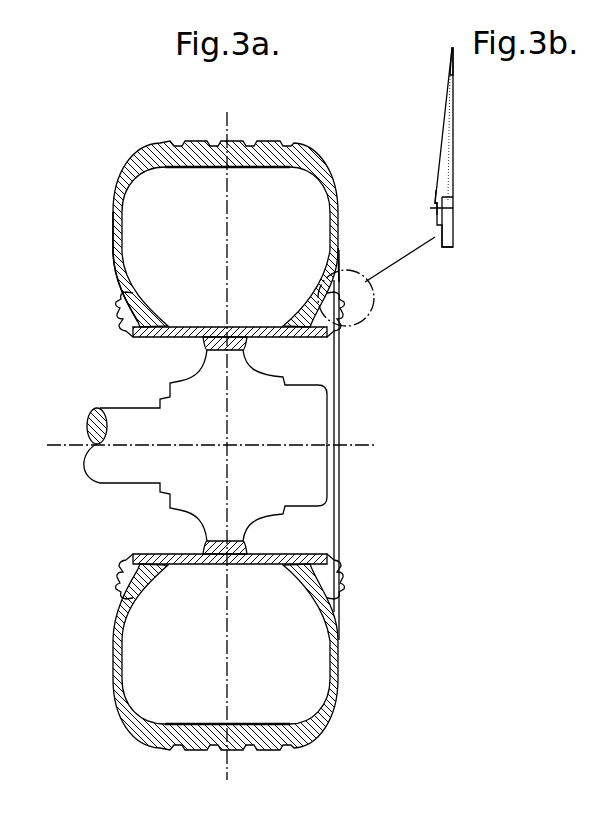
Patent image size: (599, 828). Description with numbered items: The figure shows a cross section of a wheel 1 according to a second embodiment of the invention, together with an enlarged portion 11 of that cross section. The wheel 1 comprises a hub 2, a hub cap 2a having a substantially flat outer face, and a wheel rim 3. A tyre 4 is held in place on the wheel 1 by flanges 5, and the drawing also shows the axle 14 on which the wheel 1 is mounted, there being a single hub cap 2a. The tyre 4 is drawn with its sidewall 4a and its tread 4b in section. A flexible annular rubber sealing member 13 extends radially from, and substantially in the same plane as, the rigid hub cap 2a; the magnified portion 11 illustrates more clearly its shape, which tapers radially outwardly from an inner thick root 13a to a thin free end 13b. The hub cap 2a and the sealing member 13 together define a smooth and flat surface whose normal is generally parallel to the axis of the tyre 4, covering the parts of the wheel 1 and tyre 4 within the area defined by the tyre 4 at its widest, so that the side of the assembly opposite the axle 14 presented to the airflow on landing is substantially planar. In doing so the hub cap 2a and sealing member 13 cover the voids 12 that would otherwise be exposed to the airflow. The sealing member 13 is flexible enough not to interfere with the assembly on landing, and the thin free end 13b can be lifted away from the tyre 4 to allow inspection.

In FIG. 3a, the wheel 1 is at (97, 158).
In FIG. 3b, the wheel 1 is at (593, 203).
In FIG. 3a, the hub 2 is at (273, 426).
In FIG. 3a, the hub cap 2a is at (335, 403).
In FIG. 3b, the hub cap 2a is at (443, 240).
In FIG. 3a, the wheel rim 3 is at (133, 557).
In FIG. 3a, the tyre 4 is at (260, 160).
In FIG. 3a, the tire sidewall 4a is at (117, 197).
In FIG. 3a, the tire tread 4b is at (197, 157).
In FIG. 3a, the flanges 5 is at (127, 310).
In FIG. 3a, the portion 11 is at (357, 325).
In FIG. 3a, the voids 12 is at (302, 541).
In FIG. 3a, the sealing member 13 is at (337, 252).
In FIG. 3b, the sealing member 13 is at (445, 120).
In FIG. 3b, the root 13a is at (440, 187).
In FIG. 3b, the free end 13b is at (450, 68).
In FIG. 3a, the axle 14 is at (102, 472).